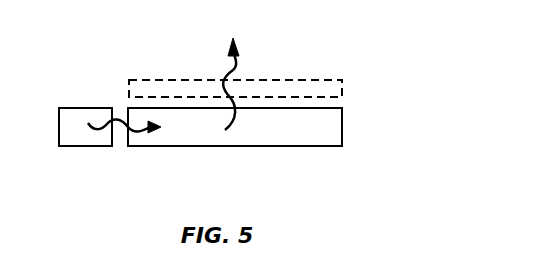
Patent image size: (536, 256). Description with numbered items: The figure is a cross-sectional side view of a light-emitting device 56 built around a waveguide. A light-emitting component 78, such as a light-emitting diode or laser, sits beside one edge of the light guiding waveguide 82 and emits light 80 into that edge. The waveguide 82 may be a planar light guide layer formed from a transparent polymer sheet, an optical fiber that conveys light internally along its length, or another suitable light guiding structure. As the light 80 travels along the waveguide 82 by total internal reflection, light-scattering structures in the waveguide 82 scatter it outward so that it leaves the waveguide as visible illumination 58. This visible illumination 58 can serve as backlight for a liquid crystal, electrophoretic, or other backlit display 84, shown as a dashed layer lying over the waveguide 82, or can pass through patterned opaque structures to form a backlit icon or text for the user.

The light-emitting device 56 is at (375, 60).
The visible illumination 58 is at (238, 66).
The light-emitting component 78 is at (85, 108).
The light 80 is at (135, 127).
The light guiding waveguide 82 is at (293, 133).
The backlit display 84 is at (326, 80).